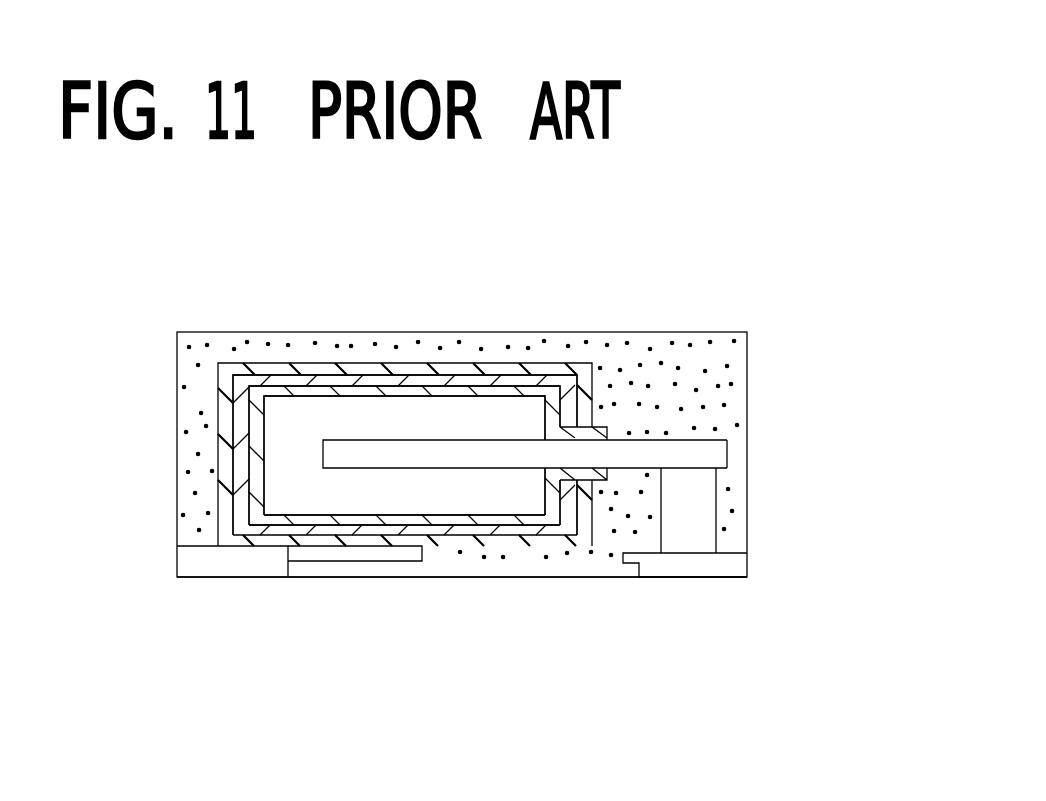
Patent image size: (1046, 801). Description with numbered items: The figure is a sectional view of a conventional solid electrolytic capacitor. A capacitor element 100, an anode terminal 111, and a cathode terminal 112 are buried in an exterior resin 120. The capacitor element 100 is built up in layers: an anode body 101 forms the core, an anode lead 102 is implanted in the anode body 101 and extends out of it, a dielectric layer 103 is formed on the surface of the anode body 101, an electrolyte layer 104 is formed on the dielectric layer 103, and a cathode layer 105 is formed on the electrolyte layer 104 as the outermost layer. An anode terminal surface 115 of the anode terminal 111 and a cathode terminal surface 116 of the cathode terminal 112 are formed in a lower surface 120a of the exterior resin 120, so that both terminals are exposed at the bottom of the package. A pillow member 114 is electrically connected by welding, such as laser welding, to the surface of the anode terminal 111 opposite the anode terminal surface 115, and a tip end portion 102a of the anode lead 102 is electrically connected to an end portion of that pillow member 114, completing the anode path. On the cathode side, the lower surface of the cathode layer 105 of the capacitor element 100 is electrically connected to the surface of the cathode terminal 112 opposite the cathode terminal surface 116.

The capacitor element 100 is at (420, 262).
The anode body 101 is at (430, 418).
The anode lead 102 is at (460, 455).
The tip end portion 102a is at (718, 435).
The dielectric layer 103 is at (505, 388).
The electrolyte layer 104 is at (555, 378).
The cathode layer 105 is at (588, 363).
The anode terminal 111 is at (738, 563).
The cathode terminal 112 is at (270, 561).
The pillow member 114 is at (690, 510).
The anode terminal surface 115 is at (684, 588).
The cathode terminal surface 116 is at (216, 588).
The exterior resin 120 is at (238, 345).
The lower surface 120a is at (504, 588).